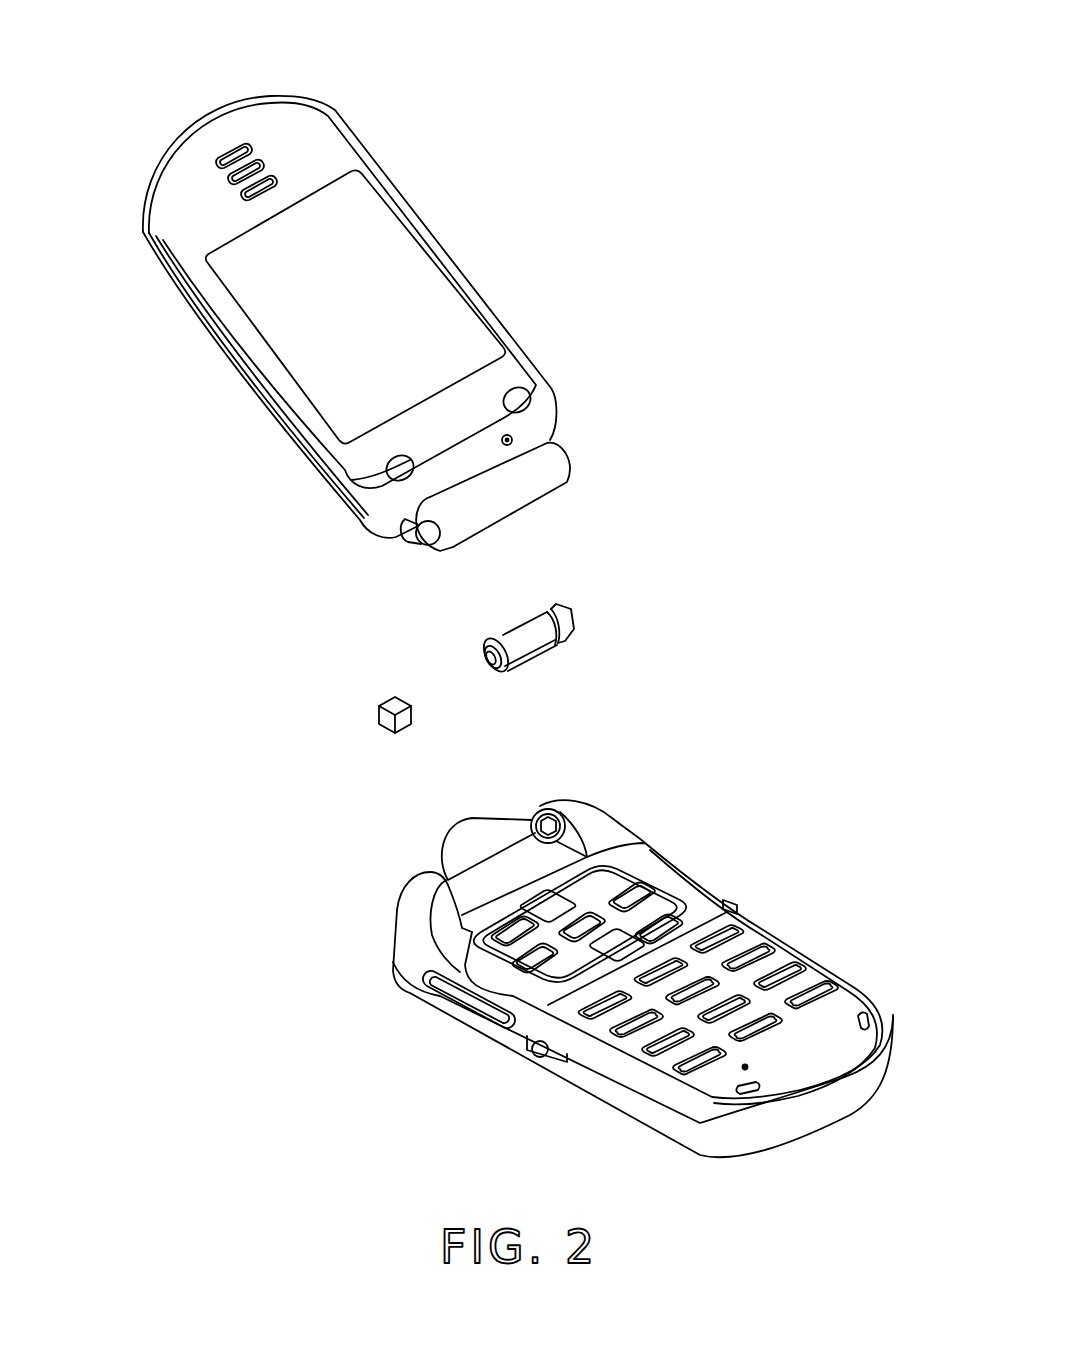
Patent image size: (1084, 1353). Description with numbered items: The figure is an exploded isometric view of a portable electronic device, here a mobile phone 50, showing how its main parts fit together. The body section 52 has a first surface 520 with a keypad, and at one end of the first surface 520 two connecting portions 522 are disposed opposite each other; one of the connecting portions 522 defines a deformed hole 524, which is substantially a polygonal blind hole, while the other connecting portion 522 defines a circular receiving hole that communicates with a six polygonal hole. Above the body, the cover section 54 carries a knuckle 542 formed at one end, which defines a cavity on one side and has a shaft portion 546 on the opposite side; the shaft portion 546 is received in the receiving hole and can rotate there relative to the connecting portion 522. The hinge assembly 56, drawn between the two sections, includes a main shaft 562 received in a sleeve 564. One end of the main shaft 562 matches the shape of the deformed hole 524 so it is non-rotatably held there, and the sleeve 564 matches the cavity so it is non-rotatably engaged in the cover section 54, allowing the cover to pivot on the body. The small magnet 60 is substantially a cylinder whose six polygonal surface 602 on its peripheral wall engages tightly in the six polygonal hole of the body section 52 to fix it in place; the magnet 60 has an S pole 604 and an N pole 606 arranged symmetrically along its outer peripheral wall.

The mobile phone 50 is at (539, 53).
The body section 52 is at (686, 834).
The first surface 520 is at (703, 900).
The connecting portions 522 is at (413, 890).
The deformed hole 524 is at (544, 827).
The cover section 54 is at (420, 170).
The knuckle 542 is at (553, 465).
The shaft portion 546 is at (424, 542).
The hinge assembly 56 is at (662, 537).
The main shaft 562 is at (558, 606).
The sleeve 564 is at (528, 630).
The magnet 60 is at (278, 693).
The six polygonal surface 602 is at (396, 702).
The S pole 604 is at (387, 727).
The N pole 606 is at (380, 712).